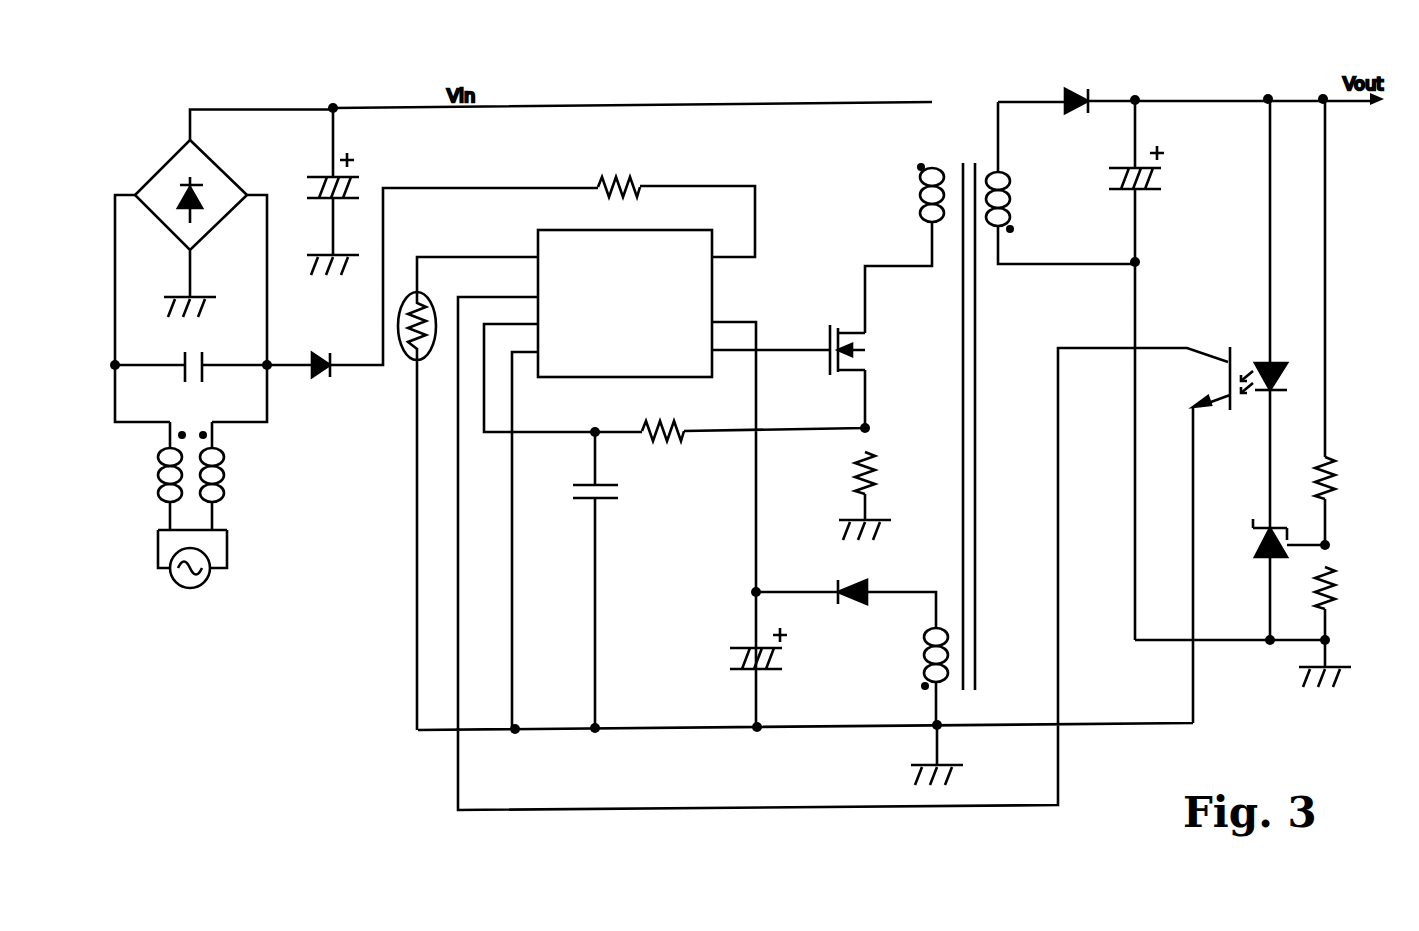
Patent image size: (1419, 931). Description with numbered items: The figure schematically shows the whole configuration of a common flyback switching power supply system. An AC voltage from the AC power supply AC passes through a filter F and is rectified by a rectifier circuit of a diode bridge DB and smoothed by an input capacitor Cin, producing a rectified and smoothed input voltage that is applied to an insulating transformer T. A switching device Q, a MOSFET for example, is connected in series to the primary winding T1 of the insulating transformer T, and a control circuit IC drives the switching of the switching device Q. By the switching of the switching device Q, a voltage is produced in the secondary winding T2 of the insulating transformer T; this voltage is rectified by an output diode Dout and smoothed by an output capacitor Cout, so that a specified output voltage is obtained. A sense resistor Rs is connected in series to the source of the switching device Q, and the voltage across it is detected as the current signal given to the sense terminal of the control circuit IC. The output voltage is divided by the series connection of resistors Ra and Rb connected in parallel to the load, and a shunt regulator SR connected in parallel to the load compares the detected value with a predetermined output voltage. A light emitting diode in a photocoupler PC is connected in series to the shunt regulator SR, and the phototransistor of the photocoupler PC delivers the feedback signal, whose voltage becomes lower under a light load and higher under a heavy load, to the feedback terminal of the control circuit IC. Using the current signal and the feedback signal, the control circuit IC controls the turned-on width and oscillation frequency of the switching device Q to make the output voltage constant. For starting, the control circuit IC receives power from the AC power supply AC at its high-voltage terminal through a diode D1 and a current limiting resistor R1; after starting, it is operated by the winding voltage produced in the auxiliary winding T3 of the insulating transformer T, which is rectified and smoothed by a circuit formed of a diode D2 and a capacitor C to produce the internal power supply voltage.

The diode bridge DB is at (225, 170).
The input capacitor Cin is at (352, 176).
The diode D1 is at (315, 375).
The filter F is at (228, 473).
The AC power supply AC is at (205, 585).
The current limiting resistor R1 is at (637, 176).
The control circuit IC is at (590, 230).
The switching device Q is at (832, 320).
The sense resistor Rs is at (883, 458).
The diode D2 is at (870, 580).
The capacitor C is at (740, 645).
The auxiliary winding T3 is at (920, 655).
The primary winding T1 is at (918, 200).
The insulating transformer T is at (968, 98).
The secondary winding T2 is at (1015, 200).
The output diode Dout is at (1080, 92).
The output capacitor Cout is at (1163, 200).
The photocoupler PC is at (1243, 350).
The shunt regulator SR is at (1255, 538).
The resistor Ra is at (1340, 470).
The resistor Rb is at (1340, 578).